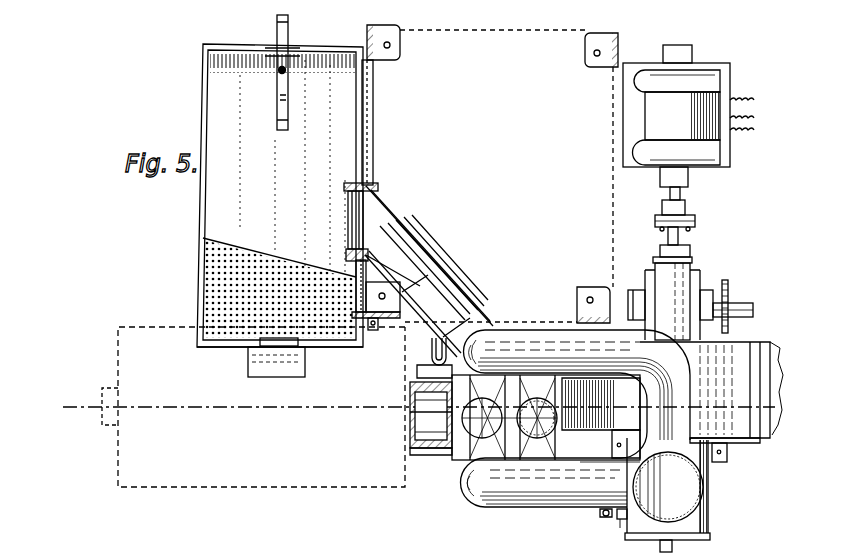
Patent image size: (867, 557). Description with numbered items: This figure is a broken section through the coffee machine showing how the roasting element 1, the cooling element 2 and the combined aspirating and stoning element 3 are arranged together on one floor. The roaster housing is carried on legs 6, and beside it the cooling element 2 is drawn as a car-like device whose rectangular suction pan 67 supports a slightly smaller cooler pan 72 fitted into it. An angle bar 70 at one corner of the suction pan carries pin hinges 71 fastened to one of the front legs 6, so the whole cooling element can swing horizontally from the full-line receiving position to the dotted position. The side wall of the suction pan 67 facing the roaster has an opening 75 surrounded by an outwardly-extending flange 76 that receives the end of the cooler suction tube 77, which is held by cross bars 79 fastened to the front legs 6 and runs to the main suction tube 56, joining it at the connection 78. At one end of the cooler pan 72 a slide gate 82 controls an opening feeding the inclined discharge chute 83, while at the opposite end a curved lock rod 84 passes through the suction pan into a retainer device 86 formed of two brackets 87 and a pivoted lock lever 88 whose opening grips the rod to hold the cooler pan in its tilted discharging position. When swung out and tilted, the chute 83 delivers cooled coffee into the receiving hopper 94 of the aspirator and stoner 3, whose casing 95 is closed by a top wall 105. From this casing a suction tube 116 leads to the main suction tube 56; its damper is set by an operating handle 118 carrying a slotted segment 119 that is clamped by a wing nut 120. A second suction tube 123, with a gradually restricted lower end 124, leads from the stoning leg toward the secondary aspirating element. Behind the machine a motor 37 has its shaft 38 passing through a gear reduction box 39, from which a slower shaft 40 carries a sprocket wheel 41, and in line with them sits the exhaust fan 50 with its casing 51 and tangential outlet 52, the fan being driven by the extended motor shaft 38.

The roasting element 1 is at (423, 45).
The cooling element 2 is at (198, 302).
The combined aspirating and stoning element 3 is at (458, 455).
The legs 6 is at (385, 27).
The motor 37 is at (688, 116).
The motor shaft 38 is at (670, 192).
The gear reduction box 39 is at (670, 298).
The shaft 40 is at (749, 310).
The sprocket wheel 41 is at (727, 280).
The exhaust fan 50 is at (734, 443).
The fan casing 51 is at (732, 362).
The tangential exhaust or outlet 52 is at (770, 393).
The main suction tube 56 is at (705, 493).
The suction pan 67 is at (203, 104).
The angle bar 70 is at (364, 340).
The pin hinges 71 is at (374, 325).
The cooler pan 72 is at (203, 266).
The opening 75 is at (349, 198).
The outwardly-extending flange 76 is at (366, 186).
The cooler suction tube 77 is at (526, 345).
The connection 78 is at (690, 446).
The cross bars 79 is at (373, 146).
The slide gate 82 is at (276, 352).
The discharge chute 83 is at (299, 373).
The lock rod 84 is at (282, 72).
The retainer or lock device 86 is at (287, 72).
The brackets 87 is at (272, 51).
The retainer or lock lever 88 is at (285, 98).
The receiving hopper 94 is at (410, 431).
The casing 95 is at (415, 403).
The top wall 105 is at (410, 449).
The suction tube 116 is at (490, 495).
The operating handle 118 is at (627, 520).
The slotted segment 119 is at (610, 474).
The wing nut 120 is at (606, 515).
The suction tube 123 is at (562, 418).
The restricted lower end 124 is at (562, 440).